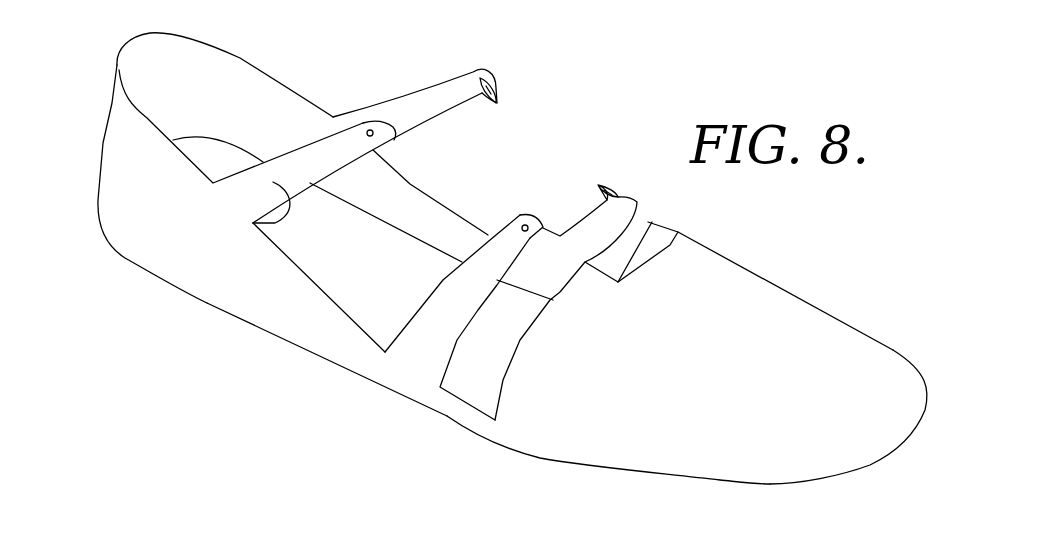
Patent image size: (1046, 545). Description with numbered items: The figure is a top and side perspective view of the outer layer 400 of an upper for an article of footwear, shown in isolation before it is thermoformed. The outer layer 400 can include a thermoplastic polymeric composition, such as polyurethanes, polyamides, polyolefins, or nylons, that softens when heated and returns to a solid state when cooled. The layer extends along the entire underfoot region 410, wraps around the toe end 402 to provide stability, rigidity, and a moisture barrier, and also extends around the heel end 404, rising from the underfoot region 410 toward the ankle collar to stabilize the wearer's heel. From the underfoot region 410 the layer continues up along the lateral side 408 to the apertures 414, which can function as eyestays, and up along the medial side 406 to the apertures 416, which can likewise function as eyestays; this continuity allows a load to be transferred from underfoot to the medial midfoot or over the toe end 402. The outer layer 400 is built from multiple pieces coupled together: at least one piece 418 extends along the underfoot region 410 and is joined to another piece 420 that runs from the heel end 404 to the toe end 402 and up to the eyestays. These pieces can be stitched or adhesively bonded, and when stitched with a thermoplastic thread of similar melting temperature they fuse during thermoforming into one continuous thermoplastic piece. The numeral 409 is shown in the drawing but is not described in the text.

The outer layer 400 is at (590, 79).
The toe end 402 is at (870, 350).
The heel end 404 is at (107, 103).
The medial side 406 is at (420, 194).
The lateral side 408 is at (422, 343).
The sole edge at heel 409 is at (163, 278).
The underfoot region 410 is at (402, 278).
The apertures 414 is at (371, 130).
The apertures 416 is at (493, 90).
The piece 418 is at (345, 277).
The piece 420 is at (516, 428).